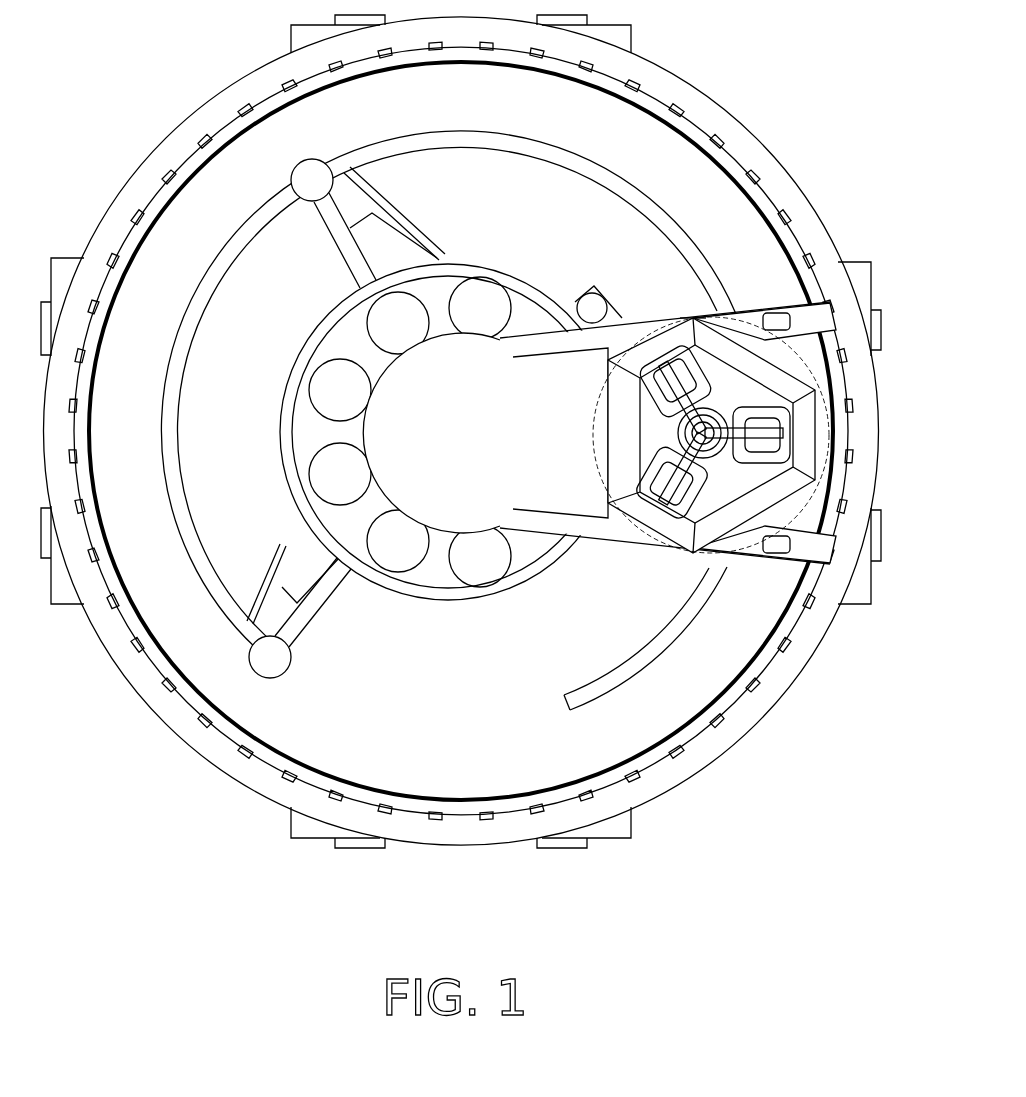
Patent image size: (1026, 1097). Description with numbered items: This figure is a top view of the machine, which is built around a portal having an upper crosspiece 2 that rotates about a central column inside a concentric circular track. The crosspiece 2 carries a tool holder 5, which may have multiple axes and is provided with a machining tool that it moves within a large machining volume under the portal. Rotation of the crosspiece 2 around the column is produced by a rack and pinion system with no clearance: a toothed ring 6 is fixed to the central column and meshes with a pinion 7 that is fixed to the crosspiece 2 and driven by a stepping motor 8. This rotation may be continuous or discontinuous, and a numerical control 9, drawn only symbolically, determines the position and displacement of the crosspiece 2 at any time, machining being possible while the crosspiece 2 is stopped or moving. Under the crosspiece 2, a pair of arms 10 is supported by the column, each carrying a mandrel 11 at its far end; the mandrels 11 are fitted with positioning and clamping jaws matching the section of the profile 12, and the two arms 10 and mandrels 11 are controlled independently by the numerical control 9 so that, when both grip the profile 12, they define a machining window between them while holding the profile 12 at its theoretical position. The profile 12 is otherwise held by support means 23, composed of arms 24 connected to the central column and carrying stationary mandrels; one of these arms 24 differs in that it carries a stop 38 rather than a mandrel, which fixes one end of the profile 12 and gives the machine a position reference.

The upper crosspiece 2 is at (570, 500).
The tool holder 5 is at (768, 378).
The toothed ring 6 is at (468, 263).
The pinion 7 is at (585, 293).
The stepping motor 8 is at (603, 290).
The numerical control 9 is at (620, 233).
The arms 10 is at (700, 318).
The mandrels 11 is at (770, 302).
The profile 12 is at (190, 540).
The support means 23 is at (337, 248).
The arm 24 is at (295, 633).
The stop 38 is at (275, 672).